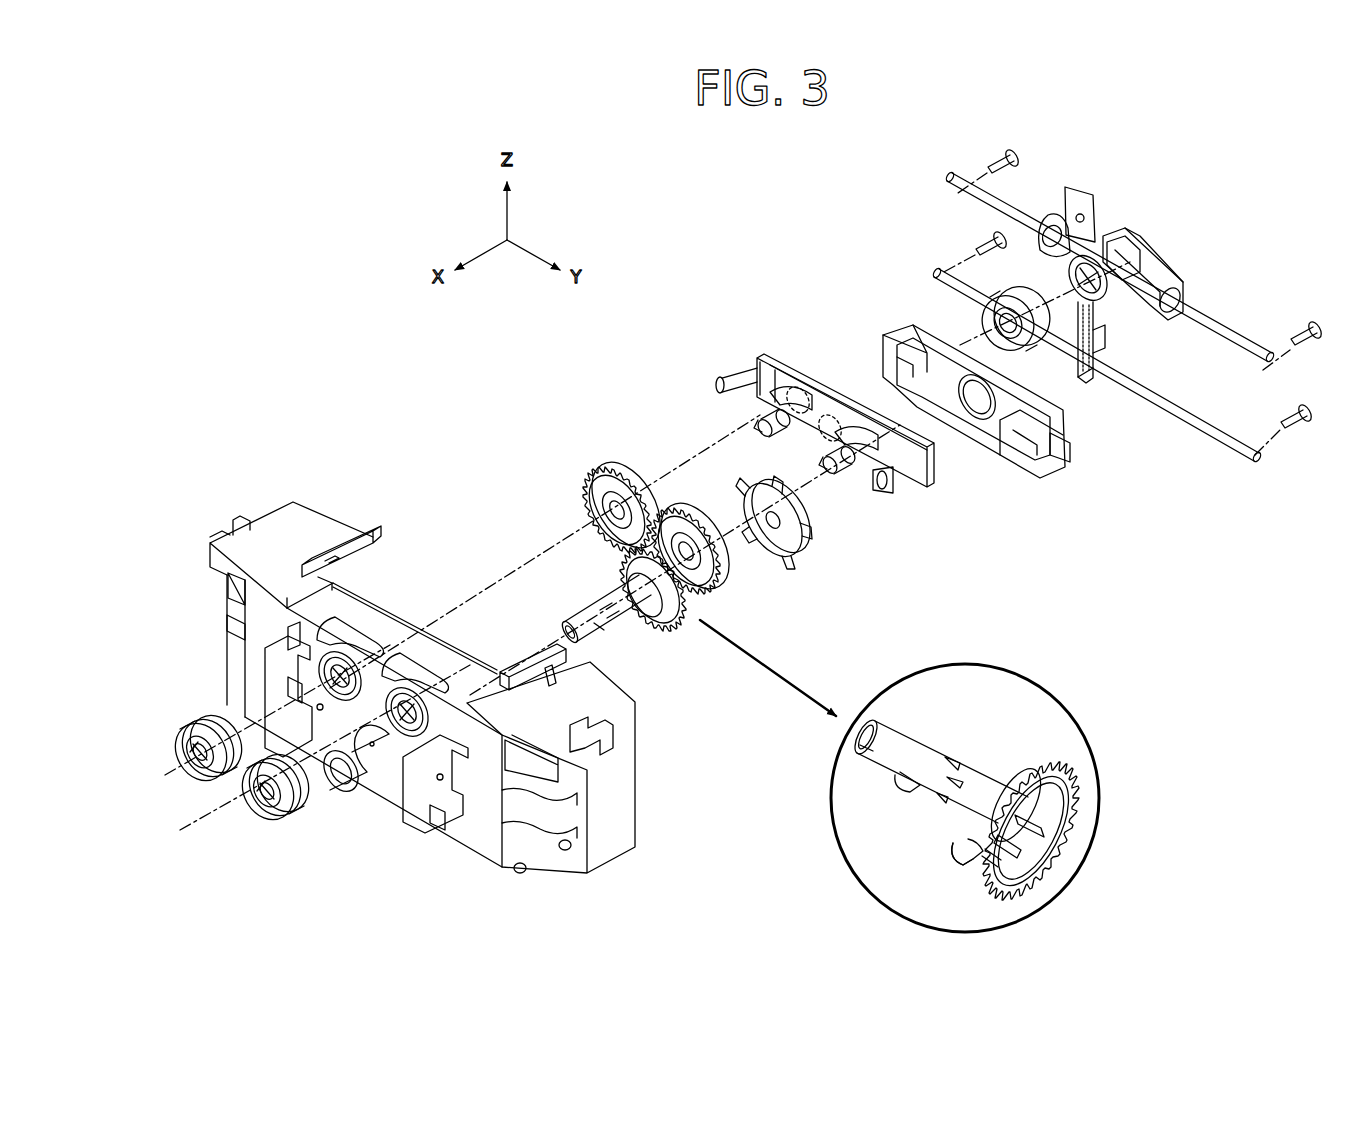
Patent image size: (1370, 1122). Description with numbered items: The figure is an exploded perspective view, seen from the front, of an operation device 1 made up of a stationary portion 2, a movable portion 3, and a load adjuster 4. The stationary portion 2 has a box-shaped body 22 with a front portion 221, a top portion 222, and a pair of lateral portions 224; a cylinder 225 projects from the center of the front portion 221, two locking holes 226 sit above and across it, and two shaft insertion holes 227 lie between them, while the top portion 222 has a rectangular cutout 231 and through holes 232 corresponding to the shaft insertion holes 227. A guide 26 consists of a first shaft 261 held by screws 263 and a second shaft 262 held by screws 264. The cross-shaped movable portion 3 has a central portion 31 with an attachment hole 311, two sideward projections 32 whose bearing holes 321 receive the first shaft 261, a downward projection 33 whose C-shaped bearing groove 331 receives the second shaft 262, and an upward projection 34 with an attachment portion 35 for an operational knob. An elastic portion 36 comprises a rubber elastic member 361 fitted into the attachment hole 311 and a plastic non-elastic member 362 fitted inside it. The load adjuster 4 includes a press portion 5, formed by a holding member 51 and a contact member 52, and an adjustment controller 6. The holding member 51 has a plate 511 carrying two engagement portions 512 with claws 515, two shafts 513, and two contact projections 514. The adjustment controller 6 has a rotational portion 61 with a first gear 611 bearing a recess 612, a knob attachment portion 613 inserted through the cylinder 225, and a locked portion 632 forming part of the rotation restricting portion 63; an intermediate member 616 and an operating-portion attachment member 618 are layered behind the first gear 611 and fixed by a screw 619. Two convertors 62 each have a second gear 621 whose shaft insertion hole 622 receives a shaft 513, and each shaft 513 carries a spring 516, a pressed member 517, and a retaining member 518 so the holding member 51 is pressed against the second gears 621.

The operation device 1 is at (273, 224).
The stationary portion 2 is at (216, 478).
The movable portion 3 is at (1201, 181).
The load adjuster 4 is at (477, 404).
The press portion 5 is at (681, 322).
The adjustment controller 6 is at (519, 467).
The body 22 is at (276, 518).
The guide 26 is at (929, 160).
The central portion 31 is at (1123, 312).
The sideward projections 32 is at (1048, 218).
The downward projection 33 is at (1088, 378).
The upward projection 34 is at (1133, 245).
The attachment portion 35 is at (1077, 192).
The elastic portion 36 is at (836, 268).
The holding member 51 is at (740, 350).
The contact member 52 is at (762, 355).
The rotational portion 61 is at (577, 603).
The convertors 62 is at (600, 460).
The rotation restricting portion 63 is at (936, 850).
The front portion 221 is at (248, 684).
The top portion 222 is at (310, 522).
The lateral portions 224 is at (630, 818).
The cylinder 225 is at (370, 768).
The locking holes 226 is at (230, 617).
The shaft insertion holes 227 is at (288, 637).
The rectangular cutout 231 is at (358, 590).
The through holes 232 is at (388, 662).
The first shaft 261 is at (947, 178).
The second shaft 262 is at (937, 271).
The screws 263 is at (1005, 155).
The screws 264 is at (989, 244).
The attachment hole 311 is at (1066, 269).
The bearing hole 321 is at (1190, 305).
The bearing groove 331 is at (1100, 373).
The elastic member 361 is at (988, 308).
The non-elastic member 362 is at (990, 330).
The plate 511 is at (772, 376).
The engagement portions 512 is at (735, 372).
The shafts 513 is at (834, 436).
The contact projections 514 is at (760, 408).
The claw 515 is at (718, 387).
The spring 516 is at (228, 735).
The pressed member 517 is at (185, 768).
The retaining member 518 is at (222, 812).
The first gear 611 is at (686, 624).
The recess 612 is at (657, 622).
The knob attachment portion 613 is at (597, 624).
The intermediate member 616 is at (795, 552).
The operating-portion attachment member 618 is at (1065, 438).
The screw 619 is at (884, 368).
The second gear 621 is at (681, 512).
The shaft insertion hole 622 is at (598, 516).
The locked portion 632 is at (962, 853).